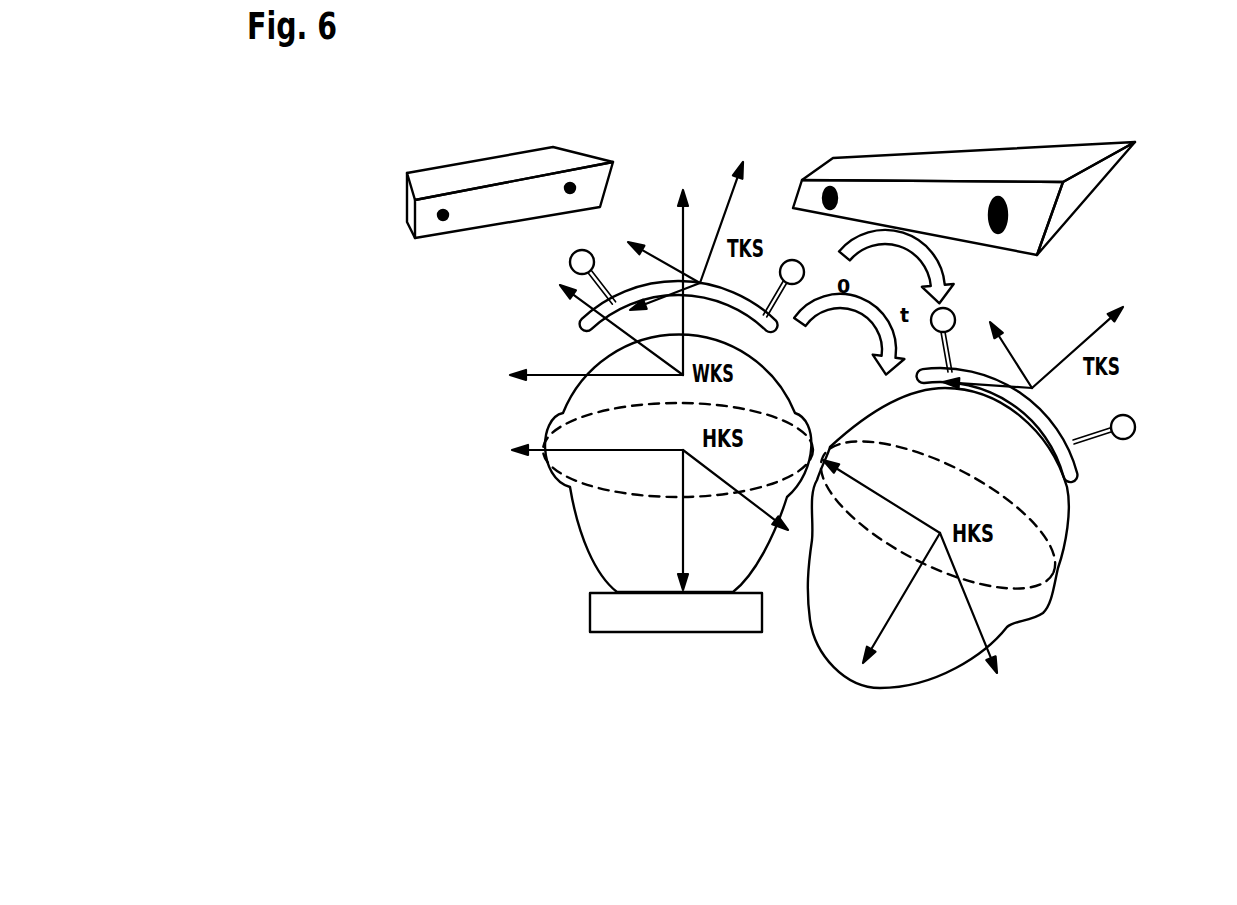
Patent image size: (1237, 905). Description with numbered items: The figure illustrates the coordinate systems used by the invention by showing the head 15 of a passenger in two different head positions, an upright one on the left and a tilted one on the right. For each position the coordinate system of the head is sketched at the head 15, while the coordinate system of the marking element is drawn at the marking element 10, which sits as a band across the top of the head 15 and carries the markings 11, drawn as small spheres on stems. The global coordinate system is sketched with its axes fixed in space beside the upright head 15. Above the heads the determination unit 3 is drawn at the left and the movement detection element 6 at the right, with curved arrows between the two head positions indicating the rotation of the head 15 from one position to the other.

The determination unit 3 is at (457, 172).
The movement detection element 6 is at (908, 165).
The marking element 10 is at (590, 327).
The markings 11 is at (571, 263).
The head 15 is at (600, 533).